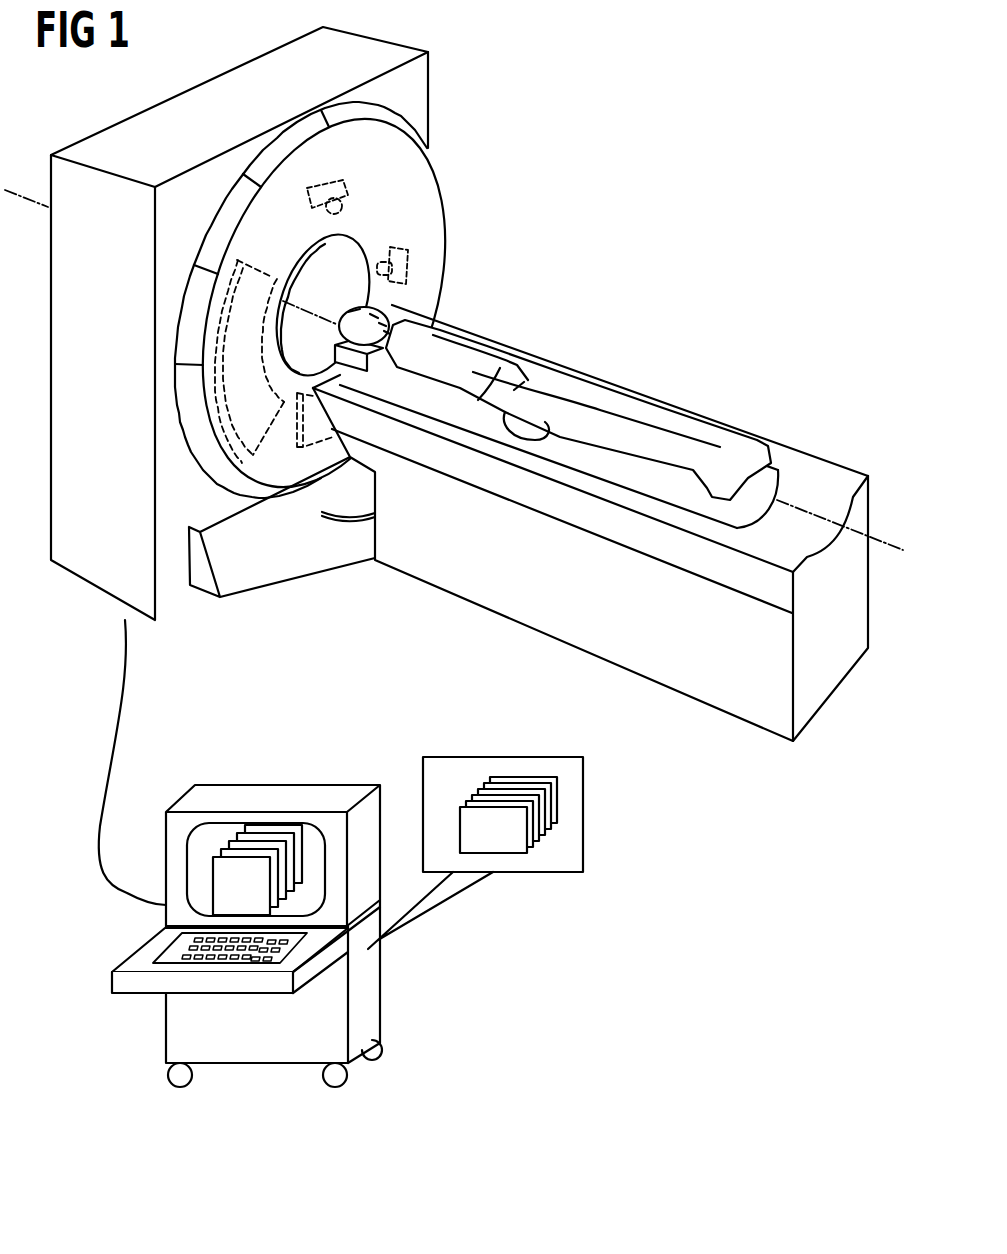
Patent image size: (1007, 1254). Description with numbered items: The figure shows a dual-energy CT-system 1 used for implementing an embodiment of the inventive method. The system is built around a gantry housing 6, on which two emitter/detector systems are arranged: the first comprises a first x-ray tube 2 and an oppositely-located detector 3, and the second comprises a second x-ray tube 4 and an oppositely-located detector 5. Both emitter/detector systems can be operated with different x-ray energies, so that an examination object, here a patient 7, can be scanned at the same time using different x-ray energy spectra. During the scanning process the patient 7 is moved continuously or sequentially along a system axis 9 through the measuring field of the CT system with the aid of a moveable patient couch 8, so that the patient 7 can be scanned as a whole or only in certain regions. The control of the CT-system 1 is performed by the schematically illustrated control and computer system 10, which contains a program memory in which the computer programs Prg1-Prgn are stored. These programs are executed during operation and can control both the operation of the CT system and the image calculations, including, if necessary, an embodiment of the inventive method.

The dual-energy CT-system 1 is at (630, 224).
The first x-ray tube 2 is at (408, 263).
The detector 3 is at (258, 433).
The second x-ray tube 4 is at (342, 188).
The detector 5 is at (312, 433).
The gantry housing 6 is at (100, 573).
The patient 7 is at (470, 357).
The moveable patient couch 8 is at (748, 682).
The system axis 9 is at (895, 547).
The control and computer system 10 is at (368, 995).
The computer programs Prg1-Prgn is at (512, 853).